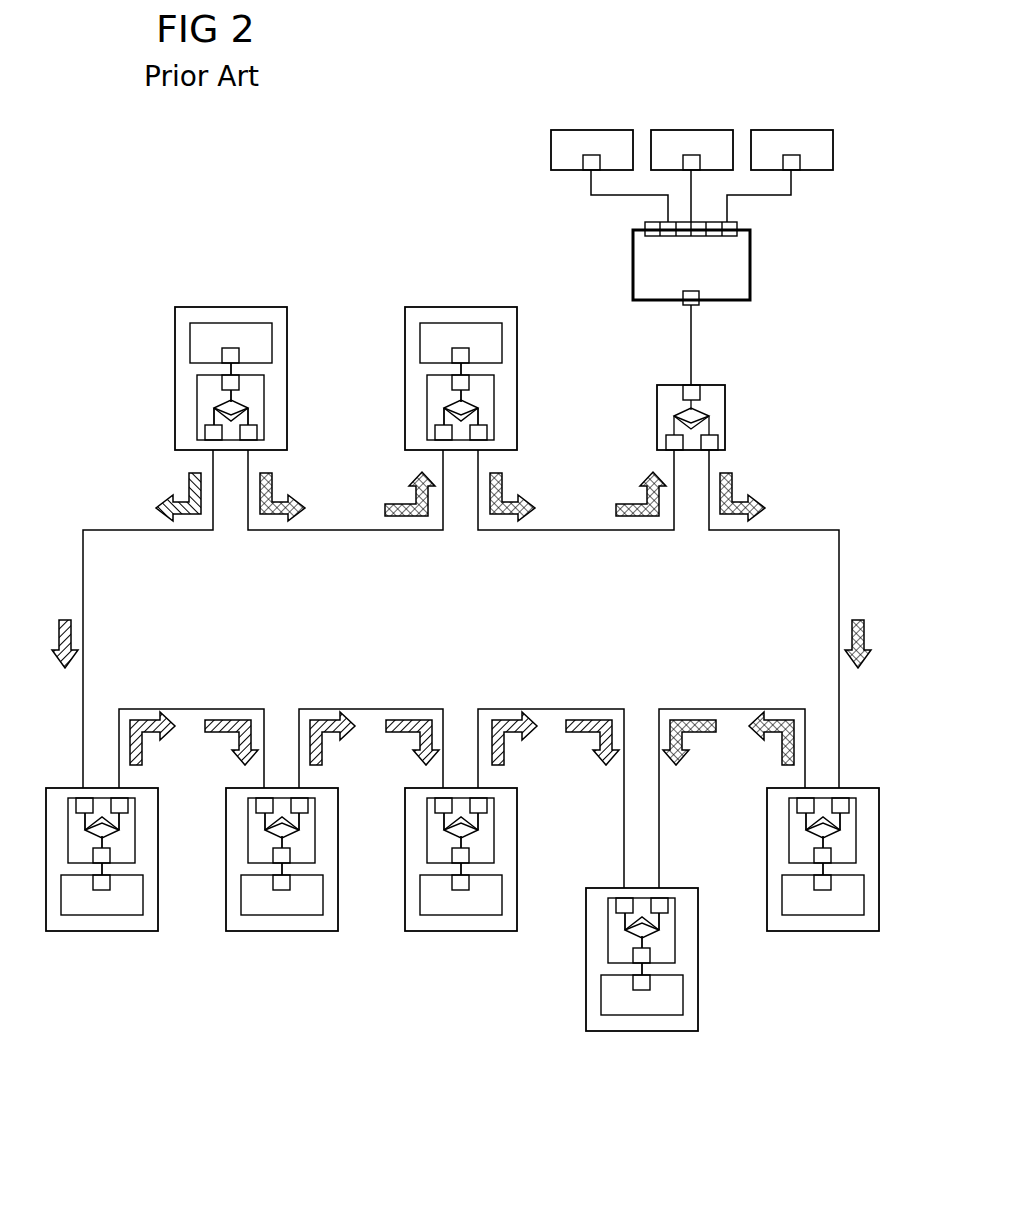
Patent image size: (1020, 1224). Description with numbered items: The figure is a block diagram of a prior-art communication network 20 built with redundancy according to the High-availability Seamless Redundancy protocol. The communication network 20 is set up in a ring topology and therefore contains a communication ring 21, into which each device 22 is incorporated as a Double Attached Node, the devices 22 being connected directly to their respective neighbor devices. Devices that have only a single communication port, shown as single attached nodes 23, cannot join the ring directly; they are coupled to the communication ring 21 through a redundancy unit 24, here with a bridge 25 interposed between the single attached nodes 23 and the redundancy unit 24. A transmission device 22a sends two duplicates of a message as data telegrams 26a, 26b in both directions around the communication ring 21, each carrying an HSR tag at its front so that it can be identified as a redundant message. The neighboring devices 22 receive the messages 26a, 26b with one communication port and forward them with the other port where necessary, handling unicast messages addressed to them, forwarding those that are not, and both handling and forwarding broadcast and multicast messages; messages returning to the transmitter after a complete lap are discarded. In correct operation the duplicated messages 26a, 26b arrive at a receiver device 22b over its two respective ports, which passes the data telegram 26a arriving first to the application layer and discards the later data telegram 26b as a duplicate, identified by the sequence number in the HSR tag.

The communication network 20 is at (385, 208).
The communication ring 21 is at (83, 566).
The device 22 is at (461, 305).
The transmission device 22a is at (231, 305).
The receiver device 22b is at (641, 1032).
The single attached node 23 is at (591, 130).
The redundancy unit 24 is at (727, 413).
The bridge 25 is at (752, 266).
The data telegram 26a is at (190, 478).
The data telegram 26b is at (272, 478).